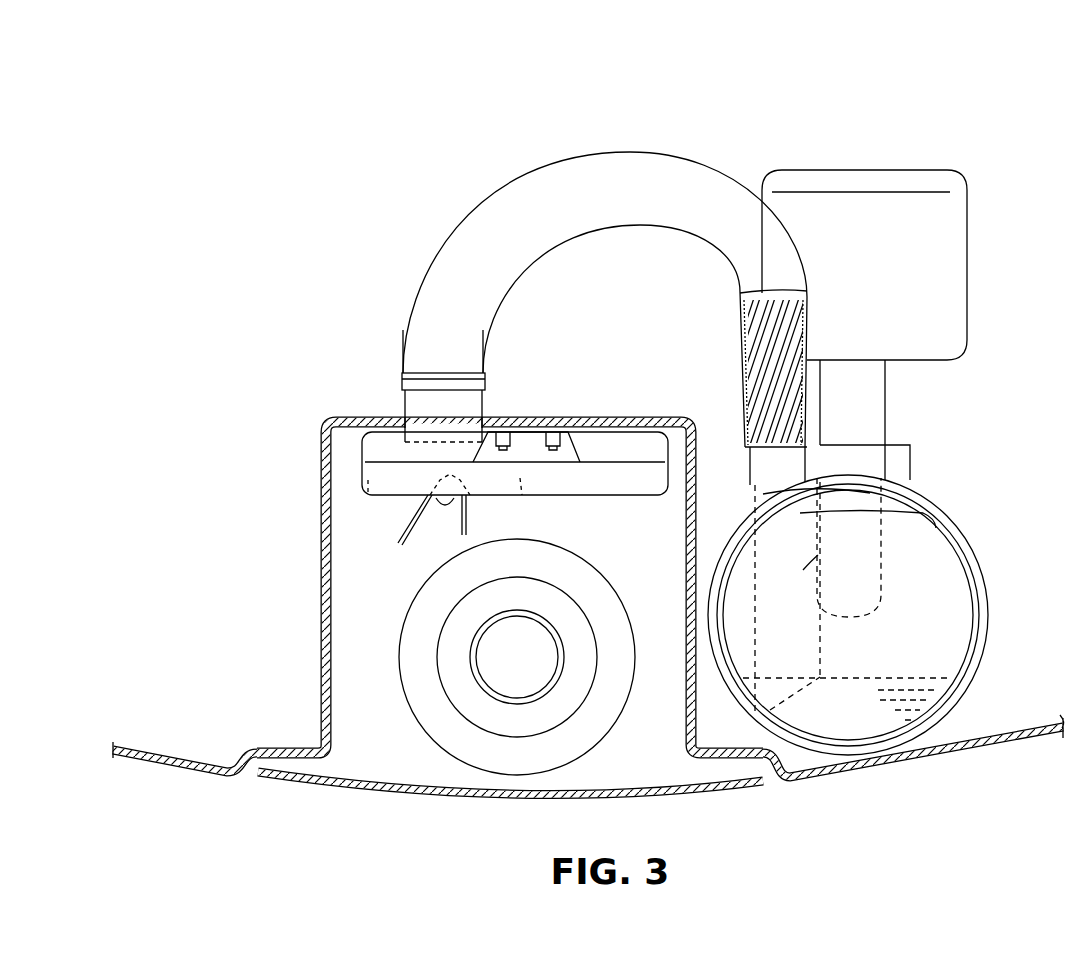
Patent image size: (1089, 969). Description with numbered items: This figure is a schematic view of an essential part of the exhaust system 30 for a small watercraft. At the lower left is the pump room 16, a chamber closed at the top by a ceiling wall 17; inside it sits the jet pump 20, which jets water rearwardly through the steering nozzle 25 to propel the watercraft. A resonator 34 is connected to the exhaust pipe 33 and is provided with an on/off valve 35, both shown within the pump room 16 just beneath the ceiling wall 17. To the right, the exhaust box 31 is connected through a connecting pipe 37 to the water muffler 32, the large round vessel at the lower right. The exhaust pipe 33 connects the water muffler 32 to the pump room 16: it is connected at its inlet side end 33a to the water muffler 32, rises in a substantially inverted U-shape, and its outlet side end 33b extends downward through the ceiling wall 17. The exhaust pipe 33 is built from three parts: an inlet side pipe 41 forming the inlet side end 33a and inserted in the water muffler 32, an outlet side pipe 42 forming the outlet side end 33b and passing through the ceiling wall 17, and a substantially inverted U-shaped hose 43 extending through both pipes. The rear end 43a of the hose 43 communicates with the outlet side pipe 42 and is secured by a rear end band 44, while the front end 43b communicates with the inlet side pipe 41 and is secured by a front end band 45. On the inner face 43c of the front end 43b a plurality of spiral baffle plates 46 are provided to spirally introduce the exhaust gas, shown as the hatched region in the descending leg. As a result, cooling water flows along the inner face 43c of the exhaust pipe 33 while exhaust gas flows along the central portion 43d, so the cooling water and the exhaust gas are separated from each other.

The pump room 16 is at (651, 412).
The ceiling wall 17 is at (565, 417).
The jet pump 20 is at (428, 658).
The steering nozzle 25 is at (470, 690).
The exhaust system 30 is at (765, 85).
The exhaust box 31 is at (893, 178).
The water muffler 32 is at (988, 585).
The exhaust pipe 33 is at (551, 170).
The inlet side end 33a is at (903, 505).
The outlet side end 33b is at (405, 397).
The resonator 34 is at (360, 450).
The on/off valve 35 is at (395, 524).
The connecting pipe 37 is at (872, 378).
The inlet side pipe 41 is at (803, 570).
The outlet side pipe 42 is at (372, 418).
The hose 43 is at (487, 218).
The rear end 43a is at (415, 340).
The front end 43b is at (820, 427).
The inner face 43c is at (808, 316).
The central portion 43d is at (770, 302).
The rear end band 44 is at (405, 378).
The front end band 45 is at (822, 458).
The spiral baffle plates 46 is at (780, 386).